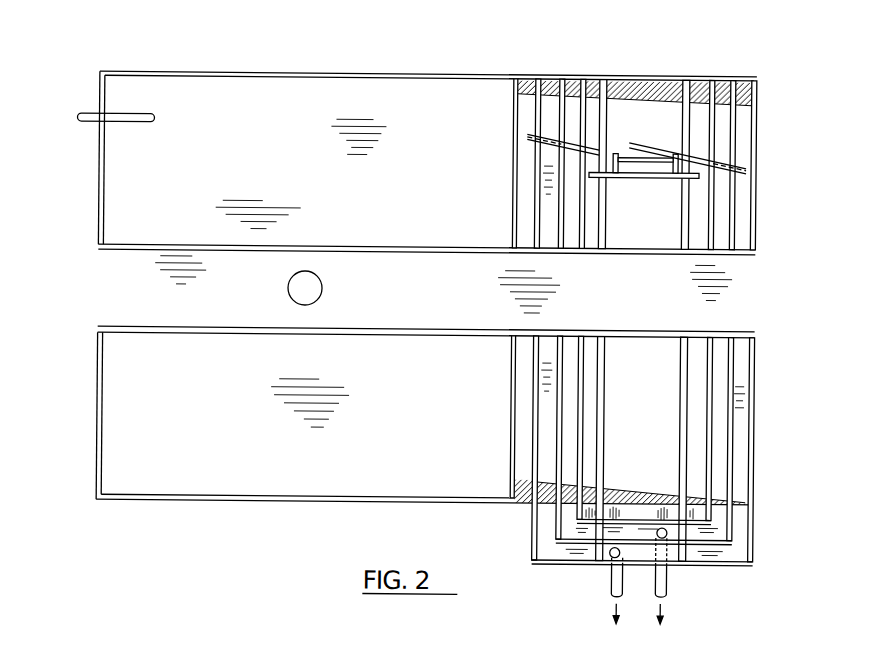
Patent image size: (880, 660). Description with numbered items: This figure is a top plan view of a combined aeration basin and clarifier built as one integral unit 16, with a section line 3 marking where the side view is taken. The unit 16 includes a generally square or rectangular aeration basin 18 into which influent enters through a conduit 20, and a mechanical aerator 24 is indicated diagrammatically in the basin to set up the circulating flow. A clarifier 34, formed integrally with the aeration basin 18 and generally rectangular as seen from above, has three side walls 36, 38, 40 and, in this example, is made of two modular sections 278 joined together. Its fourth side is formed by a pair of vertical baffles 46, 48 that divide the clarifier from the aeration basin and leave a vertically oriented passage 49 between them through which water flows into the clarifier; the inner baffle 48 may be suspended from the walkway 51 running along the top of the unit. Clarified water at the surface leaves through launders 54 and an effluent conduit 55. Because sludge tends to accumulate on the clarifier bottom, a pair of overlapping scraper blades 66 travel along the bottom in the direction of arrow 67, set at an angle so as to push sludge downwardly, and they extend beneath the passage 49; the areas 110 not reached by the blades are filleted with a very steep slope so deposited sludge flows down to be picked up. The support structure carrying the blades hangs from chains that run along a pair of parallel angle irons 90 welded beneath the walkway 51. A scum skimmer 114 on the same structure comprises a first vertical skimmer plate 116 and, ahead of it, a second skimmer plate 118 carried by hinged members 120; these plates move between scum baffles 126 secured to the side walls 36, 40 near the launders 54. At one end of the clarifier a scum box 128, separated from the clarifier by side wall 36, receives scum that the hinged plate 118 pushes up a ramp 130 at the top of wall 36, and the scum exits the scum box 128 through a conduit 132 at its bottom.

The section line 3- 3 is at (88, 286).
The integral unit 16 is at (394, 66).
The aeration basin 18 is at (287, 122).
The conduit 20 is at (127, 122).
The mechanical aerator 24 is at (289, 290).
The clarifier 34 is at (655, 70).
The side wall 36 is at (570, 507).
The side wall 38 is at (752, 405).
The side wall 40 is at (524, 78).
The clarifier outer baffle 46 is at (512, 426).
The inner clarifier baffle 48 is at (532, 451).
The vertically oriented passage 49 is at (523, 194).
The walkway 51 is at (441, 303).
The launders 54 is at (546, 381).
The effluent conduit 55 is at (613, 588).
The scraper blades 66 is at (566, 135).
The arrow 67 is at (640, 197).
The angle irons 90 is at (682, 353).
The filleted areas 110 is at (592, 80).
The scum skimmer 114 is at (585, 186).
The first vertical skimmer plate 116 is at (700, 157).
The second skimmer plate 118 is at (659, 177).
The members 120 is at (668, 158).
The scum baffles 126 is at (708, 392).
The scum box 128 is at (573, 532).
The ramp 130 is at (652, 512).
The conduit 132 is at (668, 583).
The modular sections 278 is at (722, 125).